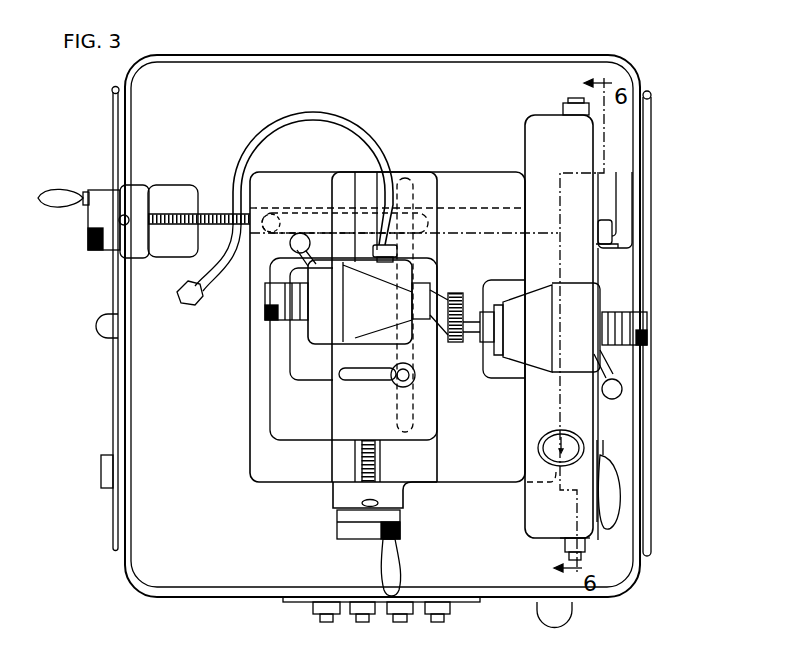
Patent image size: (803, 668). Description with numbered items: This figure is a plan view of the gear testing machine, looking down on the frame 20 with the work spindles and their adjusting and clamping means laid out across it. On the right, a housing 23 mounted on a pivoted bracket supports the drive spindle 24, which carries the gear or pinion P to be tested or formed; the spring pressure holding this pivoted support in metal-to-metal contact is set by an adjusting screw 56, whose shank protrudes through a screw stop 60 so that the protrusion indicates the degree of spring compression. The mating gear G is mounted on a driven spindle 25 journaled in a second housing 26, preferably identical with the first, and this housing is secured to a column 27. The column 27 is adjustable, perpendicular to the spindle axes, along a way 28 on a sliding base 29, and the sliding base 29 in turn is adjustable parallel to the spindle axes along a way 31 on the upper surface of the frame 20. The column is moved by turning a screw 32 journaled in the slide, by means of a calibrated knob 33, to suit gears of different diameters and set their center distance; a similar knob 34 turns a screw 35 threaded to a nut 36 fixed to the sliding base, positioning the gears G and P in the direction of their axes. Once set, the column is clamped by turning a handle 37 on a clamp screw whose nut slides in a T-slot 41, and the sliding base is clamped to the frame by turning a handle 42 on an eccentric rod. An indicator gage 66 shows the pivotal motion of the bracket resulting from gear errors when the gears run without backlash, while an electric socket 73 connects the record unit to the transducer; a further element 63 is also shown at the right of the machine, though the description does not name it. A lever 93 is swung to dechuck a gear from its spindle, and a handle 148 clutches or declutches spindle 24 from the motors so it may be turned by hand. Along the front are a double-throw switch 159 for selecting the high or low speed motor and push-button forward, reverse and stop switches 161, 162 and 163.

The frame 20 is at (176, 385).
The housing 23 is at (519, 335).
The drive spindle 24 is at (487, 373).
The driven spindle 25 is at (428, 286).
The housing 26 is at (369, 310).
The column 27 is at (288, 425).
The way 28 is at (382, 459).
The sliding base 29 is at (263, 466).
The way 31 is at (455, 207).
The screw 32 is at (403, 491).
The knob 33 is at (343, 531).
The knob 34 is at (95, 252).
The screw 35 is at (208, 216).
The nut 36 is at (268, 215).
The handle 37 is at (378, 381).
The T-slot 41 is at (415, 402).
The handle 42 is at (104, 327).
The adjusting screw 56 is at (572, 102).
The screw stop 60 is at (568, 548).
The handle 63 is at (618, 471).
The indicator gage 66 is at (581, 440).
The electric socket 73 is at (605, 220).
The lever 93 is at (616, 381).
The handle 148 is at (572, 612).
The double-throw switch 159 is at (322, 622).
The forward switch 161 is at (364, 622).
The reverse switch 162 is at (405, 622).
The stop switch 163 is at (442, 622).
The gear G is at (456, 294).
The gear or pinion P is at (455, 343).